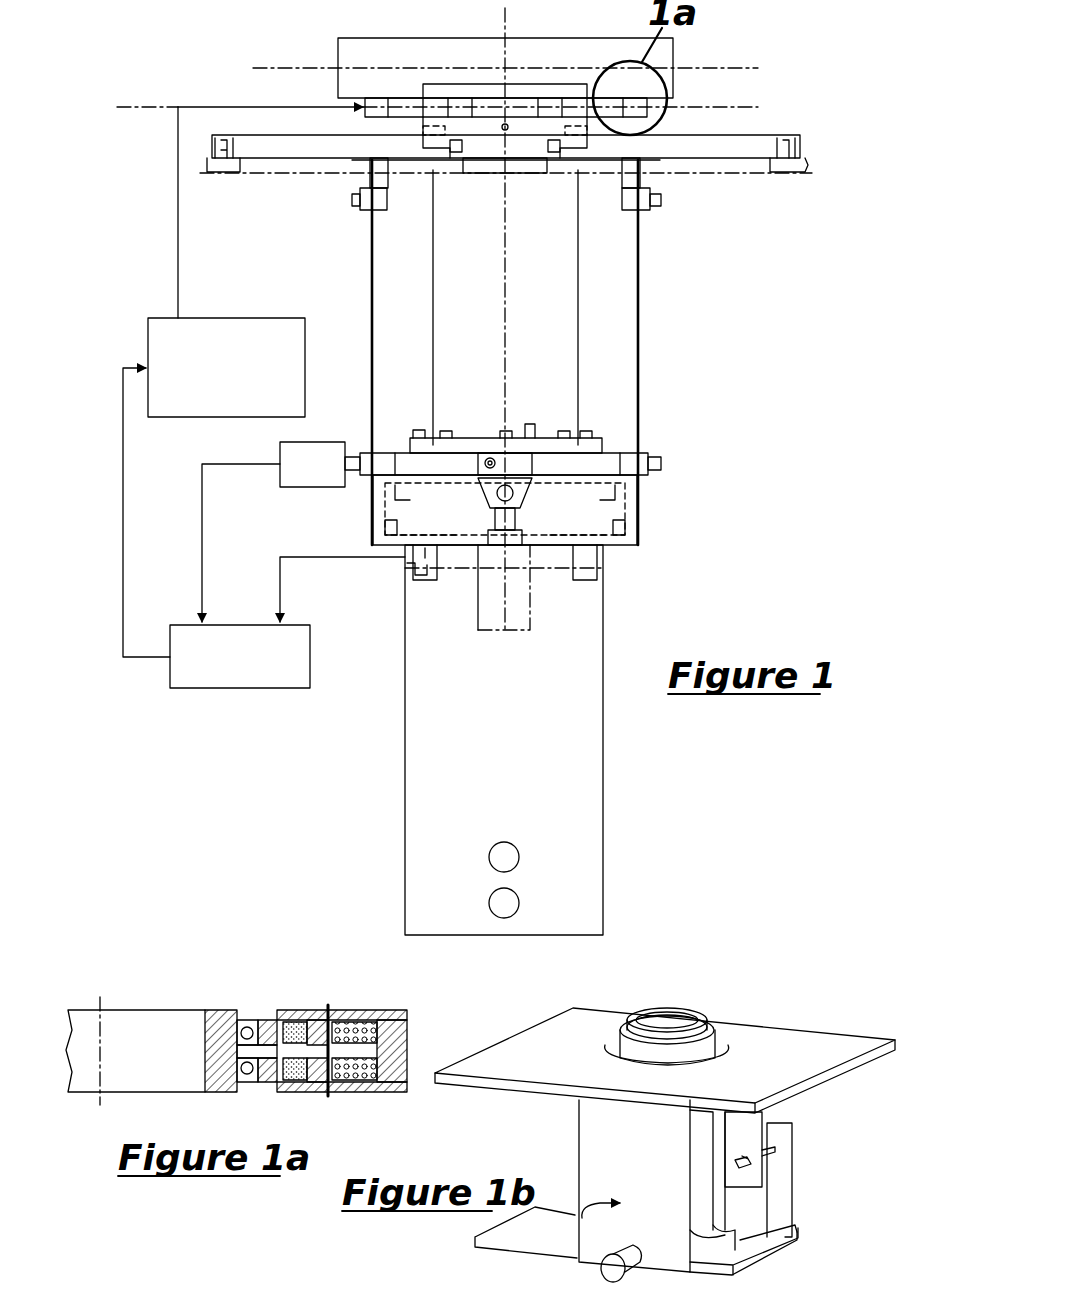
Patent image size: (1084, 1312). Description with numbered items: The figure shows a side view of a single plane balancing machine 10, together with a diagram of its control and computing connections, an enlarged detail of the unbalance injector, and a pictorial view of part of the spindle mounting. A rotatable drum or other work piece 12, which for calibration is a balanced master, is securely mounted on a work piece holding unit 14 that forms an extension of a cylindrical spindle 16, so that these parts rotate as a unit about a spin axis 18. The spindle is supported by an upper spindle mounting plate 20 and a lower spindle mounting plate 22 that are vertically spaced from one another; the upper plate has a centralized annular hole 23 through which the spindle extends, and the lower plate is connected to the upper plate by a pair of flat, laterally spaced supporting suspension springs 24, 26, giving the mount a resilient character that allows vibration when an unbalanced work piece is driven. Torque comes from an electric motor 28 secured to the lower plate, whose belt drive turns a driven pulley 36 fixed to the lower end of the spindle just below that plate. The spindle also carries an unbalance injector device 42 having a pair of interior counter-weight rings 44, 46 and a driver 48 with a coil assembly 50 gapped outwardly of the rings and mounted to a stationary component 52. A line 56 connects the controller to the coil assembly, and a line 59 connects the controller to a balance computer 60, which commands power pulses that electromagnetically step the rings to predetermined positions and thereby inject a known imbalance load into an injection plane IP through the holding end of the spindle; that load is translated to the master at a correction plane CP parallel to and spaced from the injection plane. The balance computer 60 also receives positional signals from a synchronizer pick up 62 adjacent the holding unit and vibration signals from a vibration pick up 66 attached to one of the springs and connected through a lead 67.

In FIG. 1, the single plane balancing machine 10 is at (698, 528).
In FIG. 1, the work piece 12 is at (665, 52).
In FIG. 1, the work piece holding unit 14 is at (523, 128).
In FIG. 1A, the work piece holding unit 14 is at (212, 1033).
In FIG. 1B, the work piece holding unit 14 is at (665, 1018).
In FIG. 1, the cylindrical spindle 16 is at (560, 257).
In FIG. 1B, the cylindrical spindle 16 is at (703, 1198).
In FIG. 1, the spin axis 18 is at (508, 18).
In FIG. 1, the upper spindle mounting plate 20 is at (262, 165).
In FIG. 1B, the upper spindle mounting plate 20 is at (812, 1047).
In FIG. 1, the lower spindle mounting plate 22 is at (612, 467).
In FIG. 1B, the lower spindle mounting plate 22 is at (730, 1255).
In FIG. 1, the centralized annular hole 23 is at (412, 148).
In FIG. 1B, the centralized annular hole 23 is at (725, 1038).
In FIG. 1, the supporting suspension spring 24 is at (372, 295).
In FIG. 1B, the supporting suspension spring 24 is at (575, 1255).
In FIG. 1, the supporting suspension spring 26 is at (640, 297).
In FIG. 1, the electric motor 28 is at (585, 638).
In FIG. 1, the driven pulley 36 is at (412, 506).
In FIG. 1, the unbalance injector device 42 is at (652, 118).
In FIG. 1A, the unbalance injector device 42 is at (237, 1006).
In FIG. 1B, the unbalance injector device 42 is at (632, 1030).
In FIG. 1A, the counter-weight ring 44 is at (262, 1030).
In FIG. 1A, the counter-weight ring 46 is at (265, 1082).
In FIG. 1A, the driver 48 is at (330, 1008).
In FIG. 1A, the coil assembly 50 is at (345, 1015).
In FIG. 1, the stationary component 52 is at (146, 340).
In FIG. 1, the line 56 is at (178, 211).
In FIG. 1, the line 59 is at (123, 524).
In FIG. 1, the balance computer 60 is at (310, 655).
In FIG. 1, the synchronizer pick up 62 is at (407, 575).
In FIG. 1, the vibration pick up 66 is at (310, 442).
In FIG. 1B, the vibration pick up 66 is at (628, 1270).
In FIG. 1, the lead 67 is at (202, 533).
In FIG. 1, the correction plane CP is at (752, 68).
In FIG. 1, the injection plane IP is at (752, 107).